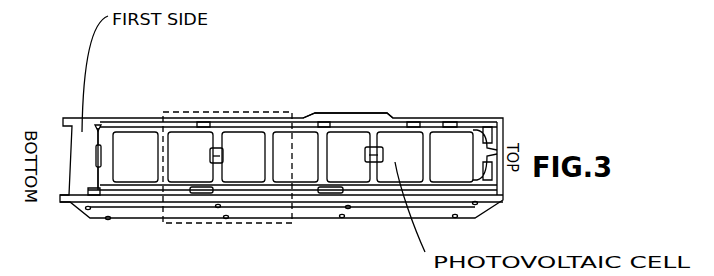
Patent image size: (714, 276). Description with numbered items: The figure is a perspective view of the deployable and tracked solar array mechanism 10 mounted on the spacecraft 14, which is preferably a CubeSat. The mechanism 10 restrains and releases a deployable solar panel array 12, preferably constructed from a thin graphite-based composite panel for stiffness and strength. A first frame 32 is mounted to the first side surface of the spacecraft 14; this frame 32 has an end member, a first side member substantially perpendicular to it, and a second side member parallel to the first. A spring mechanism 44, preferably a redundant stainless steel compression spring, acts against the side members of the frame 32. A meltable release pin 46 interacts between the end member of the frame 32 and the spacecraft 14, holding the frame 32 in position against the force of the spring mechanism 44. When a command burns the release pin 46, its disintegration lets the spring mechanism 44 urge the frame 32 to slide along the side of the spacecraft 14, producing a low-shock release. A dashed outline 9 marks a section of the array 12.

The photovoltaic module section 9 is at (222, 225).
The deployable and tracked solar array mechanism 10 is at (470, 102).
The solar panel array 12 is at (377, 125).
The spacecraft 14 is at (302, 115).
The first frame 32 is at (98, 128).
The spring mechanism 44 is at (445, 120).
The meltable release pin 46 is at (93, 158).